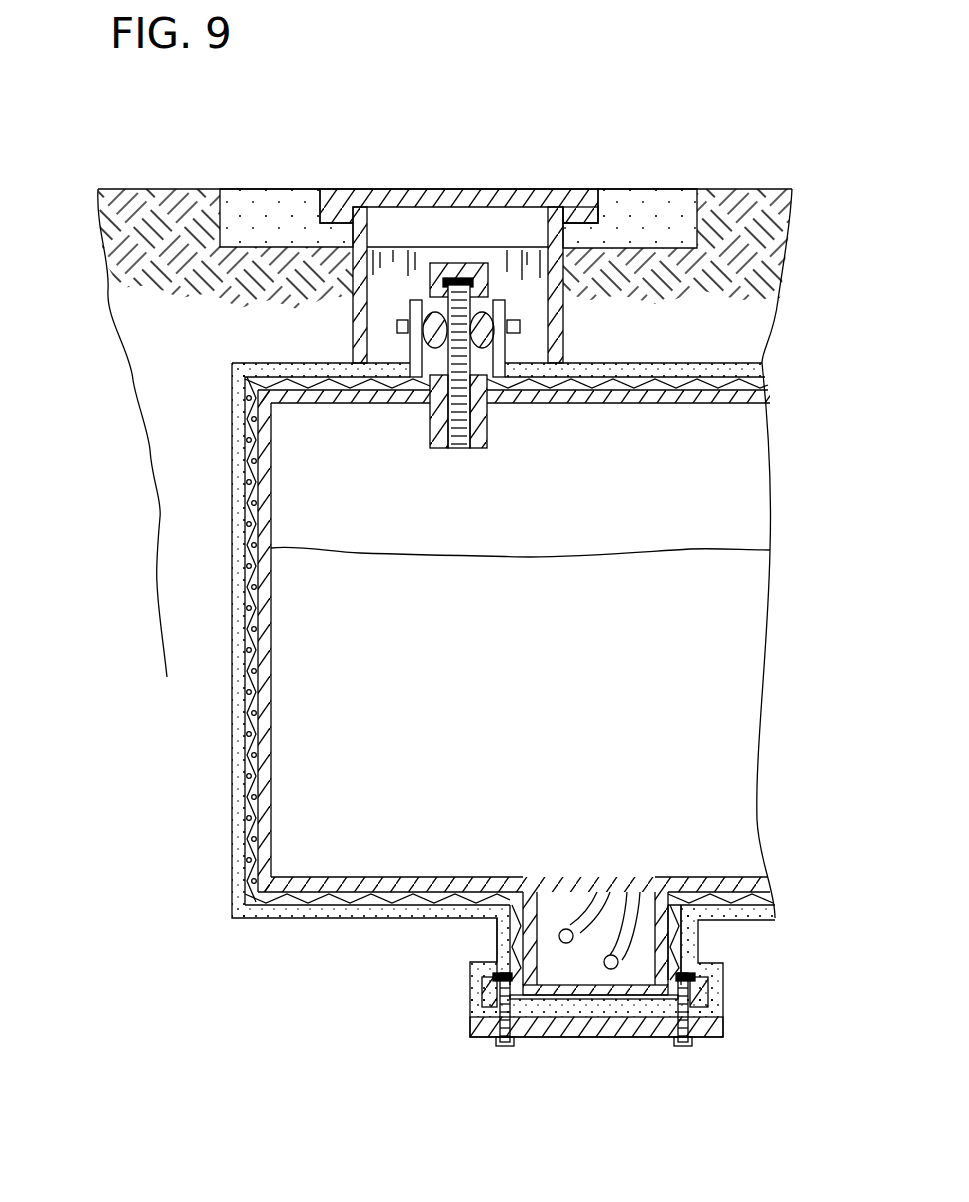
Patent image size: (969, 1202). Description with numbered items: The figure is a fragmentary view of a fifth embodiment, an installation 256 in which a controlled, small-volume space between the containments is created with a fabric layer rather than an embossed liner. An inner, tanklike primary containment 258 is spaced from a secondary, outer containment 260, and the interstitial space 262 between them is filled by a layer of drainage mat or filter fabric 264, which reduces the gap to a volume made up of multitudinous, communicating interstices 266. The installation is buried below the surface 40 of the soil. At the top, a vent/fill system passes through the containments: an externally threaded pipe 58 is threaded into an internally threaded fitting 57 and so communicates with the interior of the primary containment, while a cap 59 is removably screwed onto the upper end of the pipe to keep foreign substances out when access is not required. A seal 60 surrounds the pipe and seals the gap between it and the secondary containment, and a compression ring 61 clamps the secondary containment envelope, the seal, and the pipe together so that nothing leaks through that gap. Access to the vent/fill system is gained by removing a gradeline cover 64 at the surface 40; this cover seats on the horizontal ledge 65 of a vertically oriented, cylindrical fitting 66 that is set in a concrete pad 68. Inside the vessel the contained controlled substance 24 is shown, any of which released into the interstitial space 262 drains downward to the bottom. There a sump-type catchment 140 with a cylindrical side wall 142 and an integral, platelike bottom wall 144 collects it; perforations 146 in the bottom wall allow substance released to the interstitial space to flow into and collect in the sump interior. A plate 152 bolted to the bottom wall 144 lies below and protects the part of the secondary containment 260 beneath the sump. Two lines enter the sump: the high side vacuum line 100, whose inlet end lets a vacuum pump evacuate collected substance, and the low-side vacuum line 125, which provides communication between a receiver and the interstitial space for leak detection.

The controlled substance 24 is at (592, 557).
The surface 40 is at (130, 189).
The internally threaded fitting 57 is at (487, 435).
The externally threaded pipe 58 is at (430, 417).
The cap 59 is at (462, 263).
The seal 60 is at (482, 313).
The compression ring 61 is at (517, 327).
The gradeline cover 64 is at (437, 188).
The horizontal ledge 65 is at (567, 188).
The cylindrical fitting 66 is at (326, 176).
The concrete pad 68 is at (648, 188).
The high side vacuum line 100 is at (575, 890).
The vacuum line 125 is at (612, 880).
The sump-type catchment 140 is at (462, 936).
The cylindrical side wall 142 is at (677, 927).
The bottom wall 144 is at (653, 999).
The perforations 146 is at (563, 995).
The plate 152 is at (543, 1017).
The installation 256 is at (148, 617).
The primary containment 258 is at (285, 628).
The secondary containment 260 is at (218, 713).
The interstitial space 262 is at (248, 775).
The drainage mat or filter fabric 264 is at (230, 820).
The interstices 266 is at (250, 707).